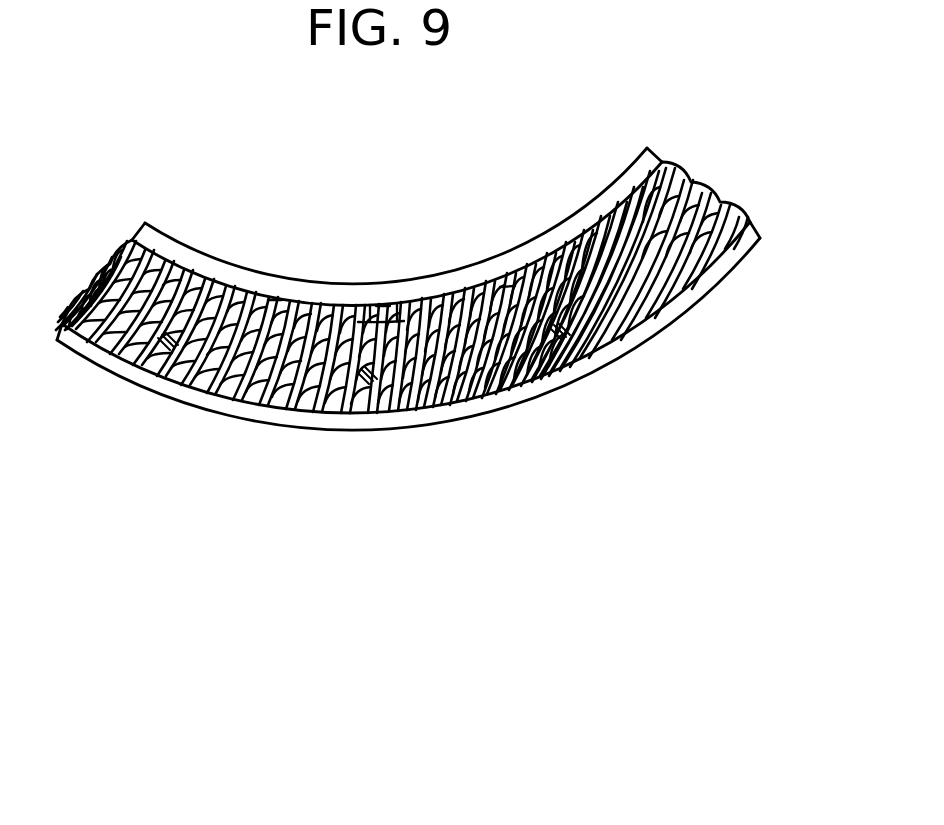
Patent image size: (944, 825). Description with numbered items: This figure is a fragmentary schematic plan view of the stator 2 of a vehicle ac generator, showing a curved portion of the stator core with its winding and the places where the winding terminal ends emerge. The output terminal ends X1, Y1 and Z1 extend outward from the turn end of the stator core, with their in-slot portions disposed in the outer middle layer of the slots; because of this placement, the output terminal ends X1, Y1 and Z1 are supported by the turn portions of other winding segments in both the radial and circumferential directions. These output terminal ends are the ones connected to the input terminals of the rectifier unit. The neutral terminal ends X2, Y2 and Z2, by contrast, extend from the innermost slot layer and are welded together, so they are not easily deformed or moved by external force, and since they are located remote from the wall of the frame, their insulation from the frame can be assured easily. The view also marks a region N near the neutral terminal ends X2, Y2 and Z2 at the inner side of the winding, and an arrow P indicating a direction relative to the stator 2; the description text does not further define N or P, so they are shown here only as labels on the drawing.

The stator 2 is at (672, 142).
The intersection portion of yarns N is at (383, 298).
The neutral terminal end Y2 is at (277, 307).
The neutral terminal end X2 is at (380, 307).
The neutral terminal end Z2 is at (507, 288).
The output terminal end Y1 is at (160, 350).
The output terminal end X1 is at (362, 385).
The output terminal end Z1 is at (561, 330).
The pressing direction P is at (366, 446).